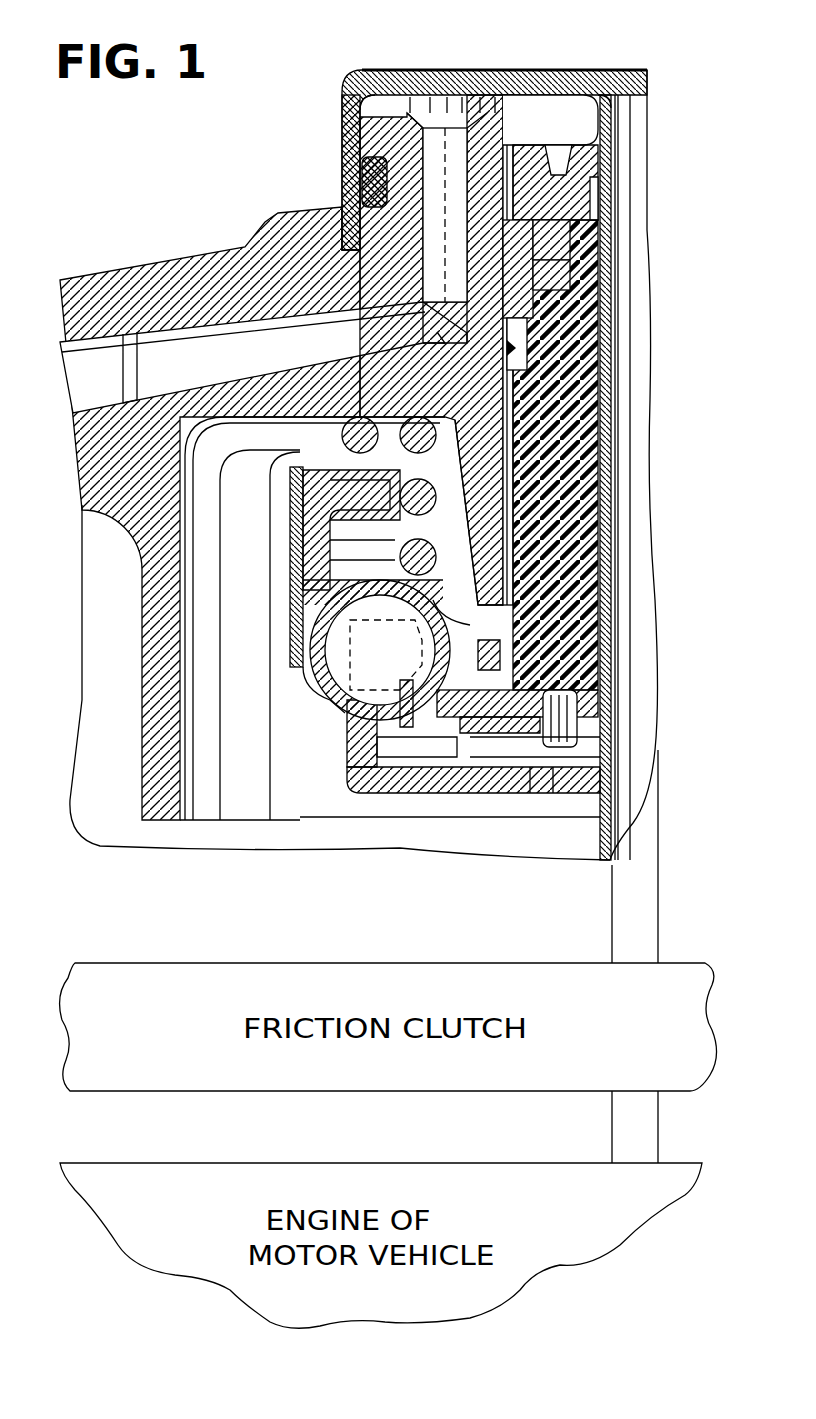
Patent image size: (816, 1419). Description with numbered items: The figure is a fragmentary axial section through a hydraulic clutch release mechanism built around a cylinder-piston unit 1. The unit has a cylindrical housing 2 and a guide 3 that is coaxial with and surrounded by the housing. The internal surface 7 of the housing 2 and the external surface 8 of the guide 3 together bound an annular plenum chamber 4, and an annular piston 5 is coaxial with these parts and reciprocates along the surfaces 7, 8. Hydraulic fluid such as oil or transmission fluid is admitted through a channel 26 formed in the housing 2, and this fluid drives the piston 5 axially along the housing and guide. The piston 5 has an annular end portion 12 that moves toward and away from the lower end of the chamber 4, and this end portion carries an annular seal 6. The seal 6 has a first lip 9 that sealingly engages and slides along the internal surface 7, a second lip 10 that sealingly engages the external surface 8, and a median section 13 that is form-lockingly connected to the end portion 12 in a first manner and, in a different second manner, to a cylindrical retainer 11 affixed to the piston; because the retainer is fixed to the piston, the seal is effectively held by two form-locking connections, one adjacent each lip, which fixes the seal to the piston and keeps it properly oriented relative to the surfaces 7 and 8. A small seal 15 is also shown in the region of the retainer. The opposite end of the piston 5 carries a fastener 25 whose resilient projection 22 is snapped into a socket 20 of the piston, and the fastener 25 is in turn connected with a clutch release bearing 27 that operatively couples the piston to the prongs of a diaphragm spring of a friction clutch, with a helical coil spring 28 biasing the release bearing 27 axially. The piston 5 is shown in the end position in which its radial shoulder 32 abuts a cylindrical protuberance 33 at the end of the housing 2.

The cylinder-piston unit 1 is at (248, 209).
The cylindrical housing 2 is at (481, 133).
The guide 3 is at (608, 608).
The annular plenum chamber 4 is at (575, 118).
The annular piston 5 is at (563, 414).
The annular seal 6 is at (565, 186).
The internal surface 7 is at (507, 150).
The external surface 8 is at (608, 122).
The first annular section or lip 9 is at (535, 120).
The second annular section or lip 10 is at (603, 152).
The cylindrical retaining member 11 is at (530, 300).
The annular end portion 12 is at (585, 222).
The third or median section 13 is at (585, 240).
The seal 15 is at (600, 276).
The recess or socket 20 is at (520, 648).
The resilient projection 22 is at (515, 668).
The fastener 25 is at (545, 717).
The channel 26 is at (437, 140).
The clutch release bearing 27 is at (345, 657).
The helical coil spring 28 is at (293, 450).
The radial shoulder 32 is at (535, 634).
The cylindrical protuberance 33 is at (495, 582).